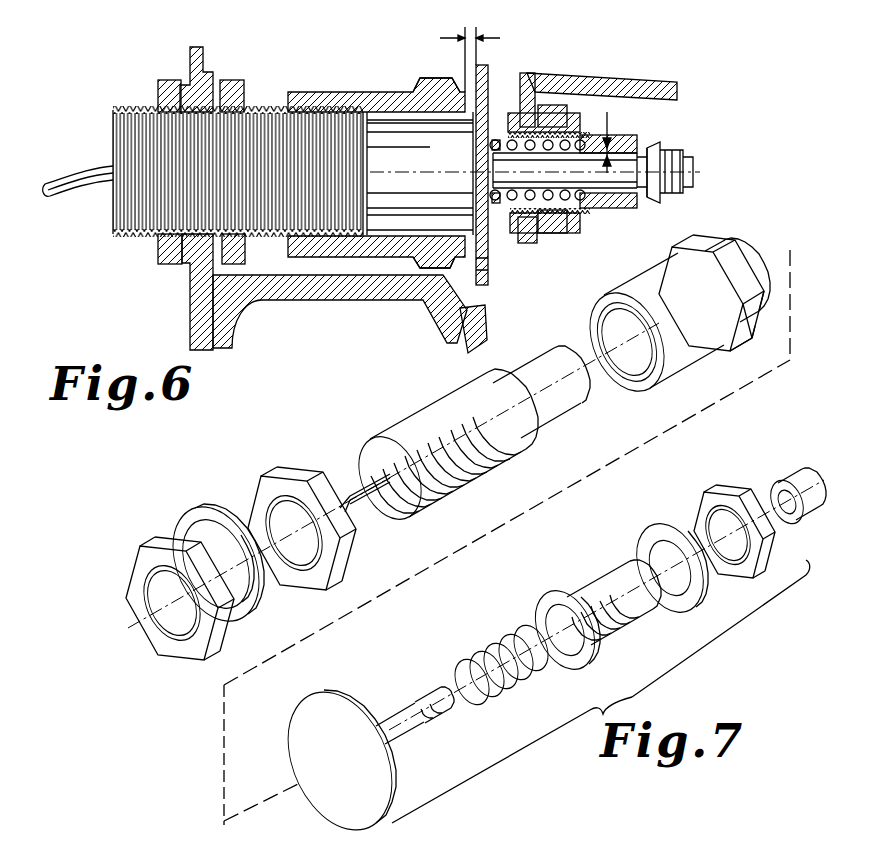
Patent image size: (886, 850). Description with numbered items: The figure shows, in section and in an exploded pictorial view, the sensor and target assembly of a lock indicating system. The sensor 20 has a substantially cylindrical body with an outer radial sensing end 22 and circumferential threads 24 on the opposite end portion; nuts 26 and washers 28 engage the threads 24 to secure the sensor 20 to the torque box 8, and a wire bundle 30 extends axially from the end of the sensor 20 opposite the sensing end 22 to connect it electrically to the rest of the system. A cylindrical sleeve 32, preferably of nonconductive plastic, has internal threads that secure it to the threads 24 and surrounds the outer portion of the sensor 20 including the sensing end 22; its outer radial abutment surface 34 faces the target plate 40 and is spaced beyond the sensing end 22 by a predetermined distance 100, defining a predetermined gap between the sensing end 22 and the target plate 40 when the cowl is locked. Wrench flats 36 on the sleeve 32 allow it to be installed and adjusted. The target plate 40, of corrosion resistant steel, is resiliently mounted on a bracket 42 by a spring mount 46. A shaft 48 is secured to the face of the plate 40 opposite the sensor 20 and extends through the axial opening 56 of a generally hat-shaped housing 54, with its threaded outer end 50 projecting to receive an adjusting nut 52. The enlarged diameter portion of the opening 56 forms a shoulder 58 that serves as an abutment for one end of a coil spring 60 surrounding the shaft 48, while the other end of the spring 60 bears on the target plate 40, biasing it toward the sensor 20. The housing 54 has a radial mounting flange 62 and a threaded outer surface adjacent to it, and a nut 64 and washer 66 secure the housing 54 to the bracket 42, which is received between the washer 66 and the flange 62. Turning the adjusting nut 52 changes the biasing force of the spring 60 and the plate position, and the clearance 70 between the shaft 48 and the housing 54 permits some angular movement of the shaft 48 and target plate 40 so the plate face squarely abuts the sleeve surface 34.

In FIG. 6, the torque box 8 is at (205, 60).
In FIG. 6, the sensor 20 is at (322, 70).
In FIG. 6, the sensing end 22 is at (472, 125).
In FIG. 7, the sensing end 22 is at (596, 385).
In FIG. 6, the circumferential threads 24 is at (136, 108).
In FIG. 7, the circumferential threads 24 is at (495, 458).
In FIG. 6, the nuts 26 is at (170, 80).
In FIG. 7, the nuts 26 is at (147, 578).
In FIG. 6, the washers 28 is at (194, 60).
In FIG. 7, the washers 28 is at (212, 540).
In FIG. 6, the wire bundle 30 is at (68, 170).
In FIG. 7, the wire bundle 30 is at (368, 478).
In FIG. 6, the sleeve 32 is at (340, 100).
In FIG. 7, the sleeve 32 is at (739, 262).
In FIG. 6, the abutment surface 34 is at (488, 284).
In FIG. 7, the abutment surface 34 is at (752, 300).
In FIG. 6, the wrench flats 36 is at (434, 84).
In FIG. 7, the wrench flats 36 is at (722, 366).
In FIG. 6, the target plate 40 is at (483, 288).
In FIG. 7, the target plate 40 is at (332, 749).
In FIG. 6, the bracket 42 is at (675, 80).
In FIG. 6, the spring mount 46 is at (657, 217).
In FIG. 6, the shaft 48 is at (570, 172).
In FIG. 7, the shaft 48 is at (398, 717).
In FIG. 6, the outer end 50 is at (655, 140).
In FIG. 7, the outer end 50 is at (438, 687).
In FIG. 6, the adjusting nut 52 is at (680, 150).
In FIG. 7, the adjusting nut 52 is at (783, 472).
In FIG. 6, the housing 54 is at (615, 135).
In FIG. 7, the housing 54 is at (619, 639).
In FIG. 6, the axial opening 56 is at (630, 212).
In FIG. 7, the axial opening 56 is at (563, 670).
In FIG. 6, the shoulder 58 is at (570, 225).
In FIG. 6, the coil spring 60 is at (505, 140).
In FIG. 7, the coil spring 60 is at (492, 624).
In FIG. 6, the mounting flange 62 is at (497, 220).
In FIG. 7, the mounting flange 62 is at (542, 594).
In FIG. 6, the nut 64 is at (568, 107).
In FIG. 7, the nut 64 is at (720, 484).
In FIG. 6, the washer 66 is at (582, 76).
In FIG. 7, the washer 66 is at (657, 516).
In FIG. 6, the clearance 70 is at (607, 173).
In FIG. 6, the predetermined distance 100 is at (489, 46).